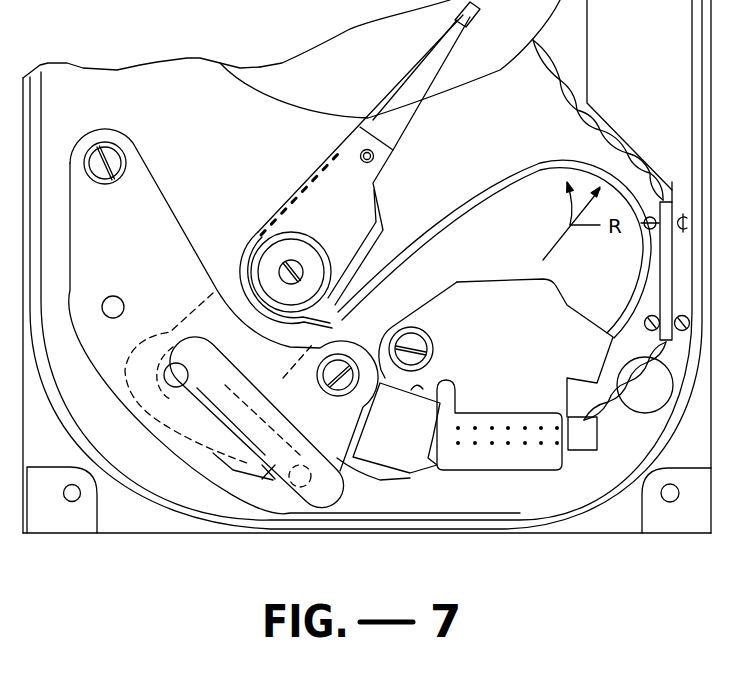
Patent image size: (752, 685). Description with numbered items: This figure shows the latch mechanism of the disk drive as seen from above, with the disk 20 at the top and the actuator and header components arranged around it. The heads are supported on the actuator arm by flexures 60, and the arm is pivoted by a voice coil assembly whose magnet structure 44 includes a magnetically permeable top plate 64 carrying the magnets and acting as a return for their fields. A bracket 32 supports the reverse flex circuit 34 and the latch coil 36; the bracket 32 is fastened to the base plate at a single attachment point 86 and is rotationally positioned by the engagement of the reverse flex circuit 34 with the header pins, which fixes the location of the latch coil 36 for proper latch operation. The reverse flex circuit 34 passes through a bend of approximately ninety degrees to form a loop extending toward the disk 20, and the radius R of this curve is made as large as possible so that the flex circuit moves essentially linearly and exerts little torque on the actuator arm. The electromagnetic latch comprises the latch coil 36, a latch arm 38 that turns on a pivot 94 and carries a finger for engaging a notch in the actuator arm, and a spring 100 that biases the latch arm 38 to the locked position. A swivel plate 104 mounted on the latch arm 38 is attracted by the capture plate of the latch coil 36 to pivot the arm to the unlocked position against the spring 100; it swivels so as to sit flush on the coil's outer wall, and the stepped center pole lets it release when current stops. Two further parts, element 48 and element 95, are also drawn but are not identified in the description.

The disk 20 is at (484, 62).
The bracket 32 is at (540, 297).
The reverse flex circuit 34 is at (513, 180).
The latch coil 36 is at (437, 470).
The latch arm 38 is at (307, 492).
The magnet structure 44 is at (150, 228).
The link arm 48 is at (343, 218).
The flexures 60 is at (403, 113).
The top plate 64 is at (167, 287).
The single attachment point 86 is at (427, 344).
The pivot 94 is at (290, 478).
The spring 95 is at (273, 475).
The spring 100 is at (331, 388).
The swivel plate 104 is at (410, 455).